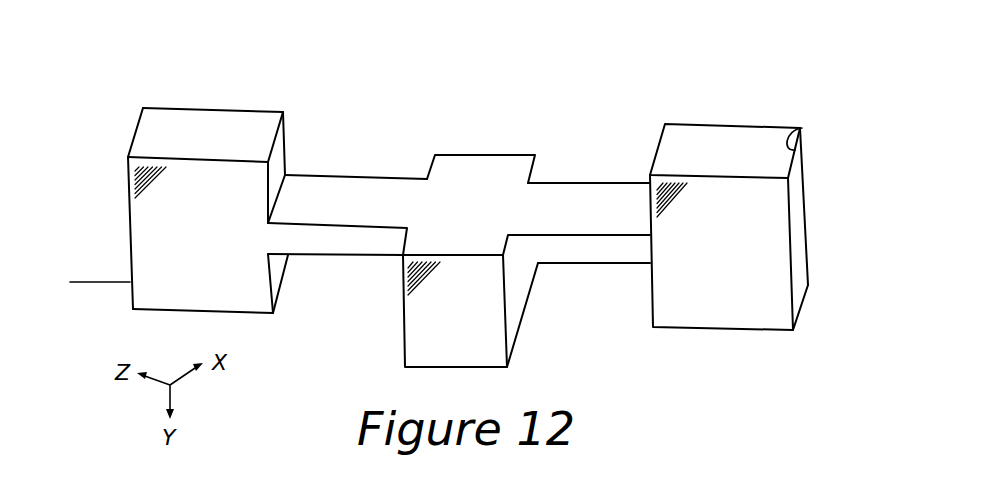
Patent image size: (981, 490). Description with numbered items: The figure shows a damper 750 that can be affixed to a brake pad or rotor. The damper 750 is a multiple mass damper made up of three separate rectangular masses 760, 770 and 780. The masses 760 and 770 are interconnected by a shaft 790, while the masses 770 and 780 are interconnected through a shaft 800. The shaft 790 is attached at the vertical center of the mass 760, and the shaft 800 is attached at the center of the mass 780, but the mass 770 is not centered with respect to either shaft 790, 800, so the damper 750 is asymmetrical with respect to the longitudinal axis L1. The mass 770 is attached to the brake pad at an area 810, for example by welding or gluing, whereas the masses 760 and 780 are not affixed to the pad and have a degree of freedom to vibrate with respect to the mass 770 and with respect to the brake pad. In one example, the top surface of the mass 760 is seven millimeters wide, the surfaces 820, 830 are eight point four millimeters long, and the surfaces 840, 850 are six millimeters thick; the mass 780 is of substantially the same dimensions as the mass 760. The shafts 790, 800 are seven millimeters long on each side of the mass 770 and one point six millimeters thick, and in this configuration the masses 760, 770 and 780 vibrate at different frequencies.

The damper 750 is at (811, 85).
The mass 760 is at (170, 120).
The mass 770 is at (480, 167).
The mass 780 is at (690, 135).
The shaft 790 is at (352, 188).
The shaft 800 is at (568, 197).
The area 810 is at (521, 375).
The surface 820 is at (122, 194).
The surface 830 is at (802, 222).
The surface 840 is at (136, 133).
The surface 850 is at (802, 128).
The longitudinal axis L1 is at (82, 282).